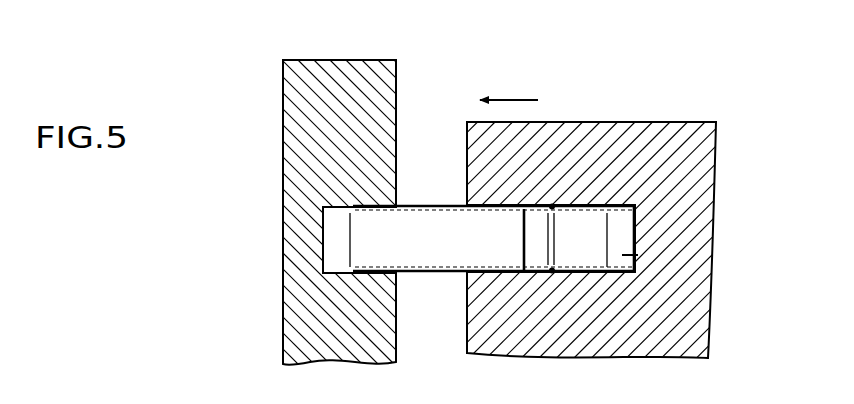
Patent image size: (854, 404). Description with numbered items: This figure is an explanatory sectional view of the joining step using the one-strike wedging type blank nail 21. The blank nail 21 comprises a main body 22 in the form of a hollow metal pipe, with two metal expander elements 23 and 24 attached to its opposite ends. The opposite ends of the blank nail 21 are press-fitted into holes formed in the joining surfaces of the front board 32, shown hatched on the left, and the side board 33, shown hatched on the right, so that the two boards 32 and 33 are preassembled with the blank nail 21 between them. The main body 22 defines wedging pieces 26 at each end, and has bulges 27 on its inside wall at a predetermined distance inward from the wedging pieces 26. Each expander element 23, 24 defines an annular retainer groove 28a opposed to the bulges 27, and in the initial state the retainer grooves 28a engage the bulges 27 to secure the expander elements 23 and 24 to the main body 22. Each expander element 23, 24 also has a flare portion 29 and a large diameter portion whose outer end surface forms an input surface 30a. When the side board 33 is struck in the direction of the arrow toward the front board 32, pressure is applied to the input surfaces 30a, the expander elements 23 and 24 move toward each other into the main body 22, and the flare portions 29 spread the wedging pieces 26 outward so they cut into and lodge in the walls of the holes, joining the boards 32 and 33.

The one-strike wedging type blank nail 21 is at (435, 158).
The main body 22 is at (430, 275).
The expander element 23 is at (338, 234).
The expander element 24 is at (621, 255).
The wedging pieces 26 is at (363, 210).
The bulges 27 is at (558, 210).
The annular retainer grooves 28a is at (548, 245).
The flare portion 29 is at (358, 217).
The input surfaces 30a is at (350, 220).
The front board 32 is at (348, 59).
The side board 33 is at (586, 120).